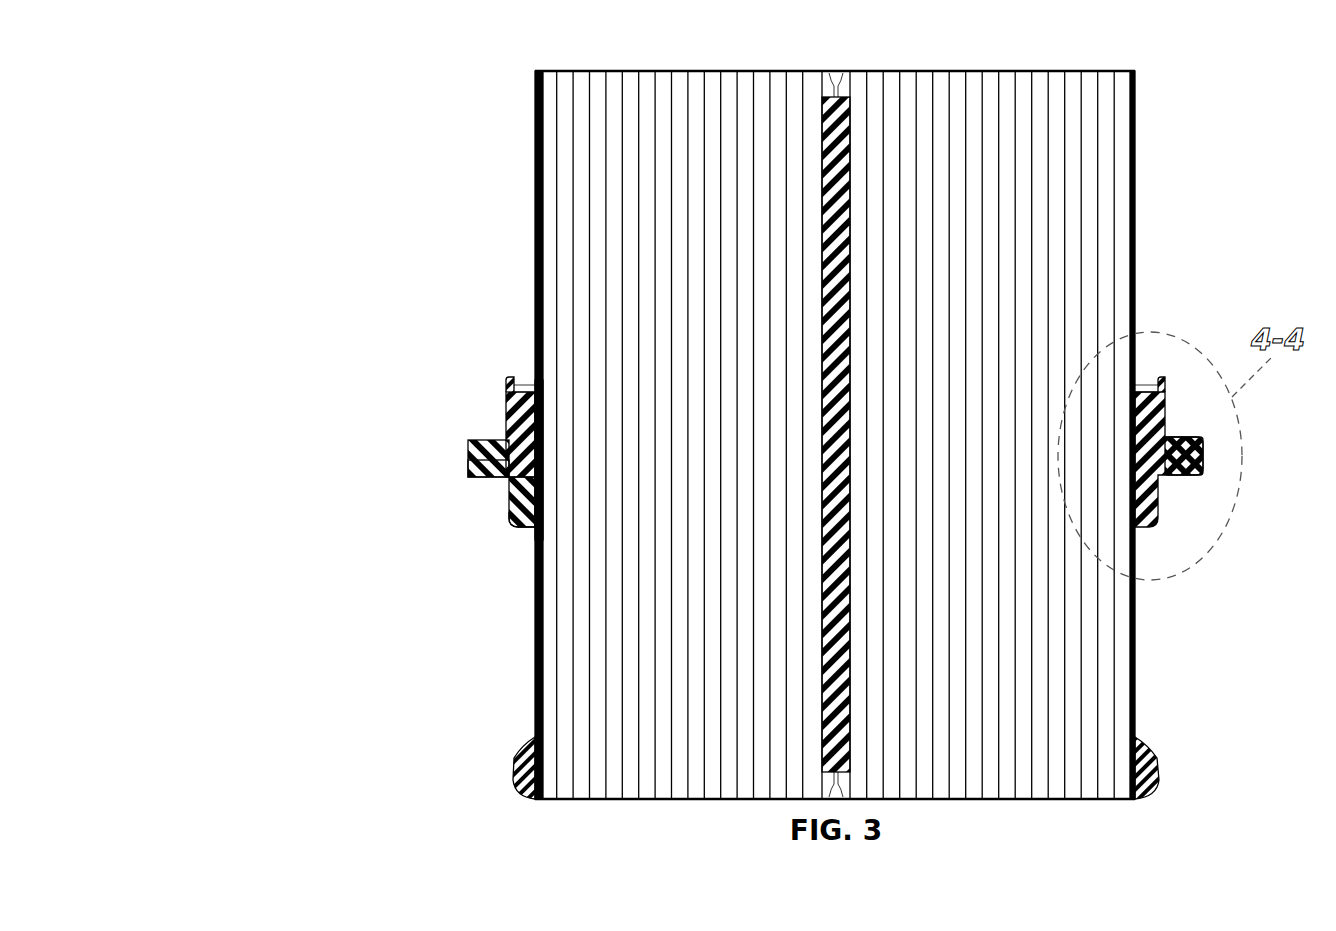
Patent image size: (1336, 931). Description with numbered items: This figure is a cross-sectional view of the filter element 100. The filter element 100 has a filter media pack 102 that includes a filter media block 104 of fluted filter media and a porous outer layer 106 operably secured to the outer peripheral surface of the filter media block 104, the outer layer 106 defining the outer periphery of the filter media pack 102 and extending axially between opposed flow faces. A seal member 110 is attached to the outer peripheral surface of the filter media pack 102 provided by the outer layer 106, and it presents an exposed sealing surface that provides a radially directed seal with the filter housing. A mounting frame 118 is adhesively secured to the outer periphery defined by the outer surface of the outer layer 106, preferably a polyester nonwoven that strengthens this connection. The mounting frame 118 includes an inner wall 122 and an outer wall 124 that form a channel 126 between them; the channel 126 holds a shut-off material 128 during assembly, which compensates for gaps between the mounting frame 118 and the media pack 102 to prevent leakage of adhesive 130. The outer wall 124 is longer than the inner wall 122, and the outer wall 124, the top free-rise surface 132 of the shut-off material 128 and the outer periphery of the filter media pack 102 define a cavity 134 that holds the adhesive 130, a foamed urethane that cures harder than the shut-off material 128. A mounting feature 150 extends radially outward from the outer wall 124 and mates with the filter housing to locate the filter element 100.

The filter element 100 is at (282, 73).
The filter media pack 102 is at (482, 62).
The filter media block 104 is at (553, 165).
The porous outer layer 106 is at (536, 632).
The seal member 110 is at (513, 758).
The mounting frame 118 is at (468, 440).
The inner wall 122 is at (536, 537).
The outer wall 124 is at (507, 415).
The channel 126 is at (506, 499).
The shut-off material 128 is at (538, 533).
The adhesive 130 is at (511, 385).
The top free-rise surface 132 is at (1158, 486).
The cavity 134 is at (528, 374).
The mounting feature 150 is at (468, 468).